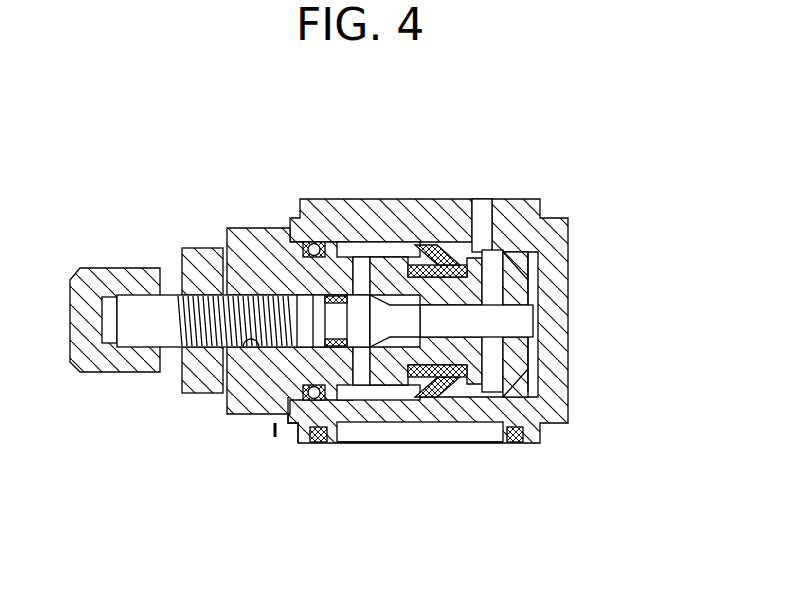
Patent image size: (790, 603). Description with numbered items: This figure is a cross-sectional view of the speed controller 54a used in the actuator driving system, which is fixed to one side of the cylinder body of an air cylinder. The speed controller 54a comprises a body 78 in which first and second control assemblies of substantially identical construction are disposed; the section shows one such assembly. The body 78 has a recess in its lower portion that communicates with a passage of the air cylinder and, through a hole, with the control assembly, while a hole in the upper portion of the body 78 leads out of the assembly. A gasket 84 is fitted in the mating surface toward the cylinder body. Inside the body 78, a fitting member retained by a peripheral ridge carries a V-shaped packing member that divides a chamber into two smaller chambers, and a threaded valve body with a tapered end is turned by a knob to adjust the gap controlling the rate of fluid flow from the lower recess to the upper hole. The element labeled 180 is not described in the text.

The speed controller 54a is at (459, 266).
The body 78 is at (557, 242).
The gasket 84 is at (525, 445).
The seal ring 180 is at (305, 240).